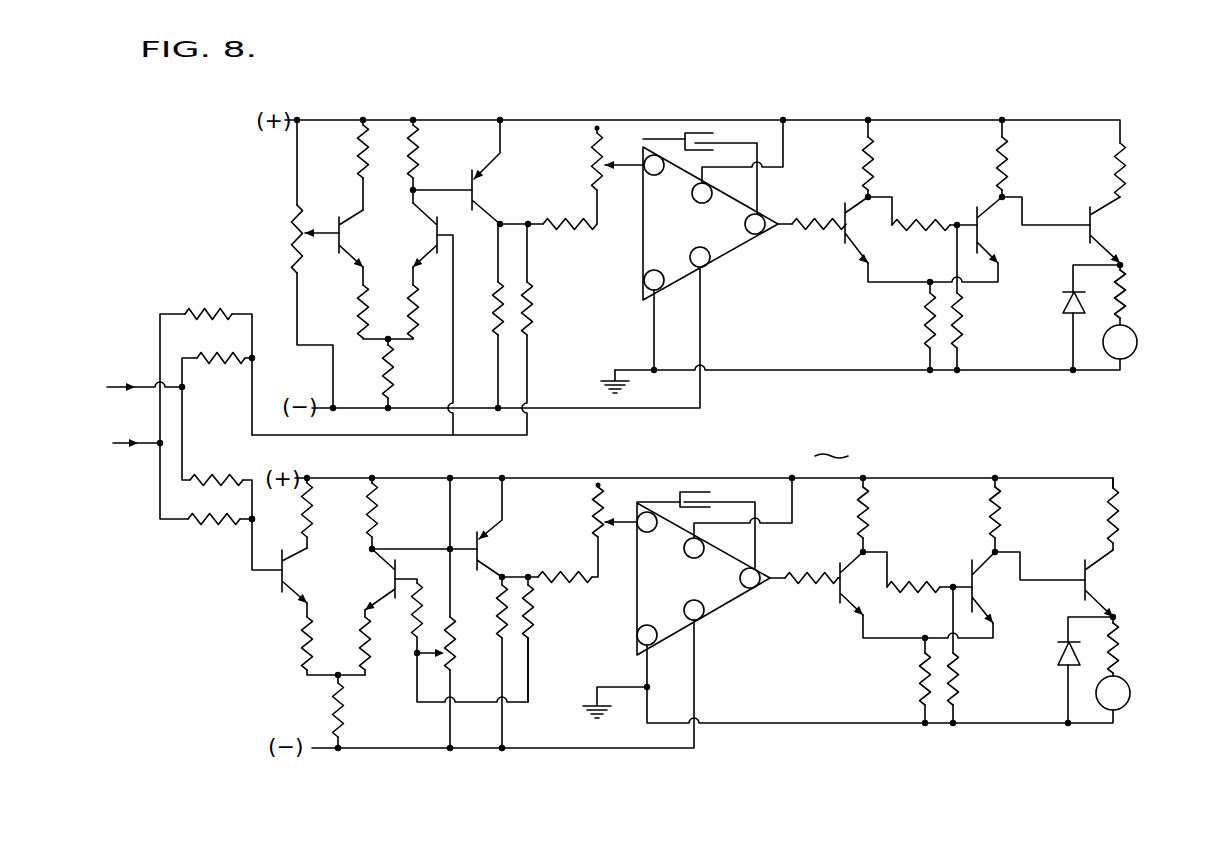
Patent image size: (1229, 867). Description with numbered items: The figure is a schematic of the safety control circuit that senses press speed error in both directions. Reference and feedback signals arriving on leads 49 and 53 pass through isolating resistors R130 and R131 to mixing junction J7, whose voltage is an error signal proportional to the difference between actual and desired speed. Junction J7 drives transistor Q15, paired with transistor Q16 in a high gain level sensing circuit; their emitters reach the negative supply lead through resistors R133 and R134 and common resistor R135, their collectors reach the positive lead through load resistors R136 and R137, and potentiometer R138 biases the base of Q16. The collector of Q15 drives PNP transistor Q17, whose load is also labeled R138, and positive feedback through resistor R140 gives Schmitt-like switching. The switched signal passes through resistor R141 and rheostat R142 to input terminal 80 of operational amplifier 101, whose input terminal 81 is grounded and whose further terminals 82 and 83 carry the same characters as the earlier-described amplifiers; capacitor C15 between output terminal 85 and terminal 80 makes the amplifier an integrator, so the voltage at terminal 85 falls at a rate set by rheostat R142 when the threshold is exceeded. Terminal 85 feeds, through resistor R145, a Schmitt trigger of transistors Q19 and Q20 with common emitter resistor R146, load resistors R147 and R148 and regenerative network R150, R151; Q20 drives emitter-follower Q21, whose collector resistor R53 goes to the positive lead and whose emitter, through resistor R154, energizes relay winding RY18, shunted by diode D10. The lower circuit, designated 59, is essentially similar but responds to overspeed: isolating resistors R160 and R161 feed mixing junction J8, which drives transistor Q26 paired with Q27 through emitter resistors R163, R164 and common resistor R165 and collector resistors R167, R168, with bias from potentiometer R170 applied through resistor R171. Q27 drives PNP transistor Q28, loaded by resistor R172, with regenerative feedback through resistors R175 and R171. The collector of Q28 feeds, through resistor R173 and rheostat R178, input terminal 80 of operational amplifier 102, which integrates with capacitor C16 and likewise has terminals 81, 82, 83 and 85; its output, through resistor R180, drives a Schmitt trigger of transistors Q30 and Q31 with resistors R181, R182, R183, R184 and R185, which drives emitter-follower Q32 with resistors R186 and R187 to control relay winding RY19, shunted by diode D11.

The input line 49 is at (138, 385).
The input line 53 is at (142, 443).
The second amplifier circuit 59 is at (831, 442).
The input terminal 80 is at (650, 176).
The input terminal 81 is at (645, 272).
The operational amplifier terminal 82 is at (695, 198).
The operational amplifier terminal 83 is at (697, 248).
The output terminal 85 is at (747, 232).
The differential operational amplifier 101 is at (733, 250).
The differential operational amplifier 102 is at (735, 600).
The mixing junction J7 is at (287, 345).
The mixing junction J8 is at (252, 519).
The isolating resistor R130 is at (226, 313).
The isolating resistor R131 is at (237, 360).
The emitter resistor R133 is at (362, 313).
The emitter resistor R134 is at (416, 327).
The common resistor R135 is at (391, 368).
The load resistor R136 is at (360, 155).
The load resistor R137 is at (422, 143).
The potentiometer R138 is at (293, 222).
The feedback resistor R140 is at (532, 292).
The resistor R141 is at (555, 218).
The rheostat R142 is at (595, 160).
The resistor R145 is at (827, 192).
The common resistor R146 is at (925, 318).
The load resistor R147 is at (873, 177).
The load resistor R148 is at (1003, 163).
The resistor R150 is at (950, 210).
The resistor R151 is at (963, 317).
The resistor R154 is at (1125, 297).
The resistor R53 is at (1127, 163).
The isolating resistor R160 is at (200, 477).
The isolating resistor R161 is at (202, 523).
The emitter resistor R163 is at (302, 663).
The emitter resistor R164 is at (363, 620).
The common resistor R165 is at (335, 733).
The collector resistor R167 is at (308, 503).
The collector resistor R168 is at (373, 517).
The potentiometer R170 is at (450, 653).
The resistor R171 is at (415, 623).
The load resistor R172 is at (497, 617).
The resistor R173 is at (575, 540).
The resistor R175 is at (531, 633).
The rheostat R178 is at (593, 520).
The resistor R180 is at (812, 553).
The resistor R181 is at (920, 670).
The resistor R182 is at (867, 525).
The resistor R183 is at (1000, 527).
The resistor R184 is at (950, 563).
The resistor R185 is at (960, 675).
The resistor R186 is at (1110, 515).
The resistor R187 is at (1117, 640).
The NPN transistor Q15 is at (440, 255).
The NPN transistor Q16 is at (337, 221).
The PNP transistor Q17 is at (471, 180).
The transistor Q19 is at (843, 245).
The transistor Q20 is at (977, 207).
The NPN transistor Q21 is at (1090, 207).
The NPN transistor Q26 is at (282, 583).
The NPN transistor Q27 is at (393, 570).
The PNP transistor Q28 is at (477, 533).
The transistor Q30 is at (838, 597).
The transistor Q31 is at (972, 567).
The transistor Q32 is at (1082, 575).
The capacitor C15 is at (713, 132).
The capacitor C16 is at (712, 492).
The diode D10 is at (1065, 317).
The diode D11 is at (1060, 667).
The relay winding RY18 is at (1132, 333).
The relay winding RY19 is at (1128, 703).